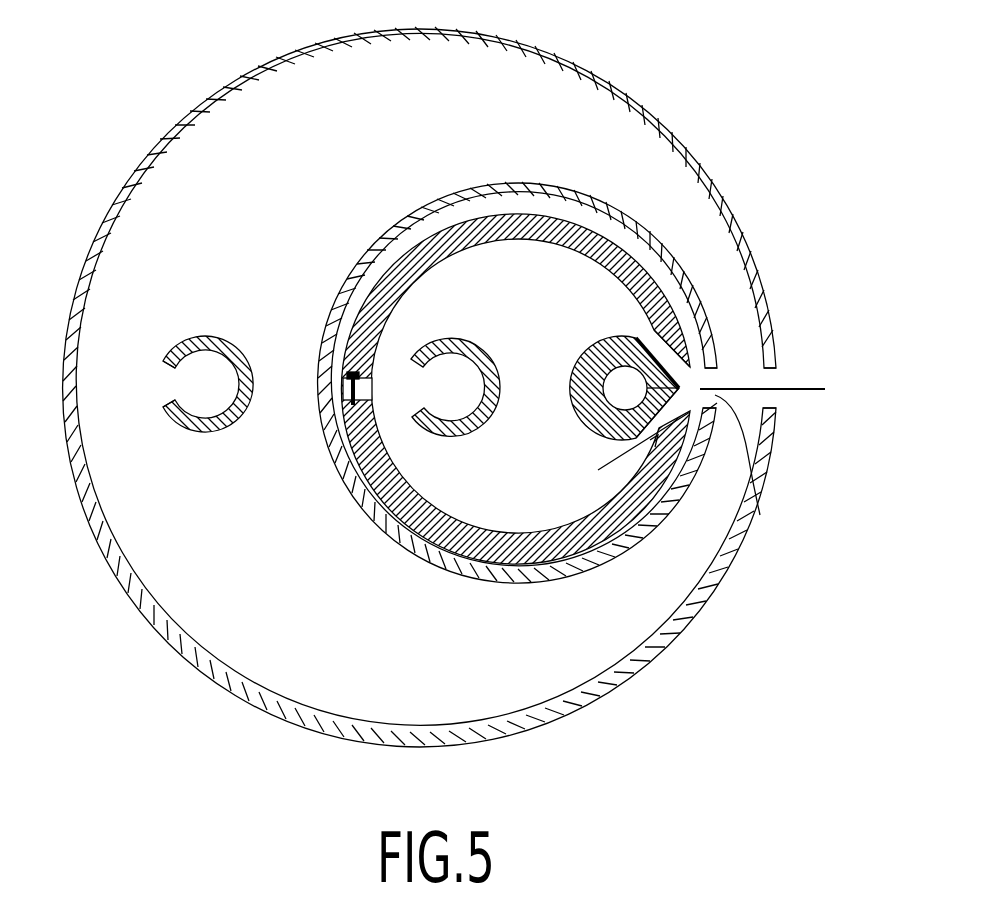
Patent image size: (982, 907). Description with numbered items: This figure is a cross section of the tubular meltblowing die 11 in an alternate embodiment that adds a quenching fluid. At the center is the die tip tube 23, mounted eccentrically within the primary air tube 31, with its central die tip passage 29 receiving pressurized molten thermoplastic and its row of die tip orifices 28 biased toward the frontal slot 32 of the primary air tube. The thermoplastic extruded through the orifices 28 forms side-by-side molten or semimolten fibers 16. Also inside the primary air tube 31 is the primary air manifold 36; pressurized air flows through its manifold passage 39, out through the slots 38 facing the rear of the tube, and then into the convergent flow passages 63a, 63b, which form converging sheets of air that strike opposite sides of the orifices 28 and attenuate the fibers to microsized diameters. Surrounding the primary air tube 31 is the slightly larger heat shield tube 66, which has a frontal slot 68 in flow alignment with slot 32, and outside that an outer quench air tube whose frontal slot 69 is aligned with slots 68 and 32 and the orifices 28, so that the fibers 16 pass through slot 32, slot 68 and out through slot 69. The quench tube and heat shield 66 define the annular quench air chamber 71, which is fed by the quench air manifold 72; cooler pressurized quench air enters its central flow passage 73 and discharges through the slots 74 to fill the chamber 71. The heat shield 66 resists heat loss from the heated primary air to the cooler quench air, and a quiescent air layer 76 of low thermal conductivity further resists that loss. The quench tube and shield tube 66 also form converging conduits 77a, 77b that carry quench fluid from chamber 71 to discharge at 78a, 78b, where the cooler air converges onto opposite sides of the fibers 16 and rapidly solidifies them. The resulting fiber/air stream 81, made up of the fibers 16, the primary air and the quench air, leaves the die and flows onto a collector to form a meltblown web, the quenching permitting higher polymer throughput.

The meltblowing die 11 is at (189, 58).
The annular quench air chamber 71 is at (163, 192).
The heat shield tube 66 is at (397, 226).
The quiescent air layer 76 is at (352, 308).
The primary air tube 31 is at (504, 247).
The convergent flow passage 63a is at (651, 343).
The convergent flow passage 63b is at (662, 425).
The primary air manifold 36 is at (455, 340).
The slots 38 is at (427, 392).
The manifold passage 39 is at (462, 405).
The die tip tube 23 is at (591, 365).
The central die tip passage 29 is at (618, 390).
The die tip orifices 28 is at (620, 437).
The frontal slot 32 is at (722, 405).
The frontal slot 68 is at (695, 400).
The frontal slot 69 is at (776, 393).
The fibers 16 is at (740, 388).
The fiber/air stream 81 is at (795, 388).
The discharge 78a is at (750, 345).
The discharge 78b is at (750, 405).
The converging conduit 77a is at (713, 280).
The converging conduit 77b is at (752, 437).
The quench air manifold 72 is at (203, 336).
The slots 74 is at (175, 390).
The central flow passage 73 is at (212, 394).